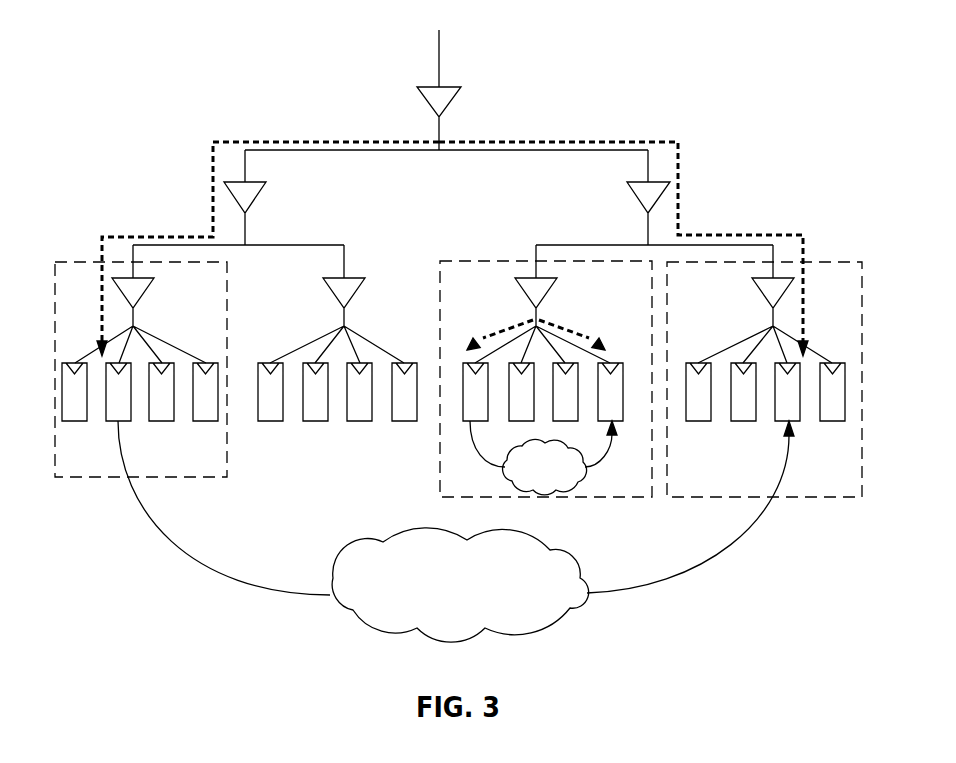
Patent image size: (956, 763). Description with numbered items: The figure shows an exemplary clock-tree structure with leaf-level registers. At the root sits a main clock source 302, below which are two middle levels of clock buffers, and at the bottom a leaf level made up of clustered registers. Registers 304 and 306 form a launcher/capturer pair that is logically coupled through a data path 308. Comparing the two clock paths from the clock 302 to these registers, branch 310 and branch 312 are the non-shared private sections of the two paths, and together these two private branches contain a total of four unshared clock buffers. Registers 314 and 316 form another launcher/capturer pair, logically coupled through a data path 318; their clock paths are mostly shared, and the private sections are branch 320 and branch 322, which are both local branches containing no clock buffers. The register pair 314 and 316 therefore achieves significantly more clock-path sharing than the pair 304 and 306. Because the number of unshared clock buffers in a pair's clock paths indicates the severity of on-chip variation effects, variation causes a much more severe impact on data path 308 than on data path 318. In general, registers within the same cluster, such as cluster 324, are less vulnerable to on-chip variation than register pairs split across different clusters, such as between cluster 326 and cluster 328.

The main clock source 302 is at (439, 77).
The register 304 is at (131, 421).
The register 306 is at (777, 419).
The data path 308 is at (456, 531).
The branch 310 is at (213, 140).
The branch 312 is at (678, 140).
The register 314 is at (465, 421).
The register 316 is at (622, 421).
The data path 318 is at (543, 458).
The branch 320 is at (516, 322).
The branch 322 is at (566, 323).
The cluster 324 is at (441, 261).
The cluster 326 is at (56, 262).
The cluster 328 is at (861, 262).